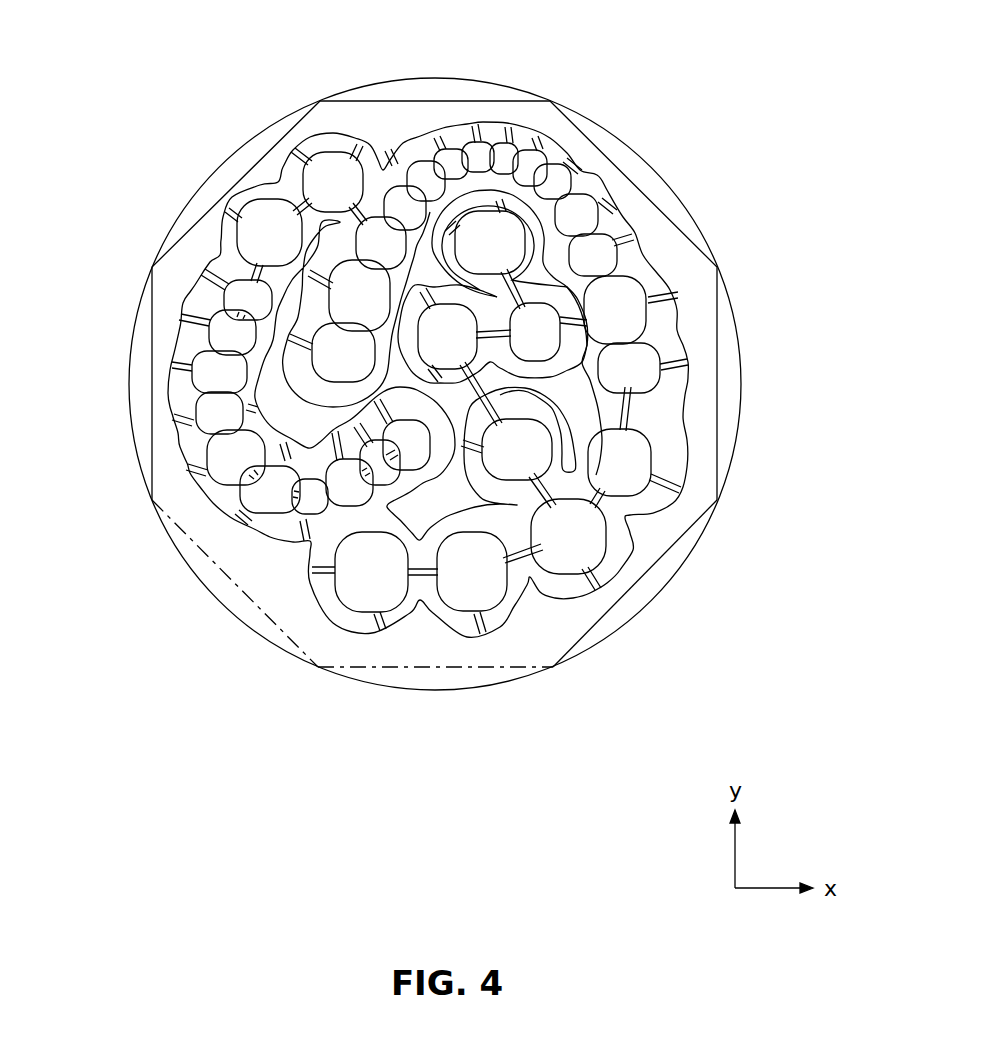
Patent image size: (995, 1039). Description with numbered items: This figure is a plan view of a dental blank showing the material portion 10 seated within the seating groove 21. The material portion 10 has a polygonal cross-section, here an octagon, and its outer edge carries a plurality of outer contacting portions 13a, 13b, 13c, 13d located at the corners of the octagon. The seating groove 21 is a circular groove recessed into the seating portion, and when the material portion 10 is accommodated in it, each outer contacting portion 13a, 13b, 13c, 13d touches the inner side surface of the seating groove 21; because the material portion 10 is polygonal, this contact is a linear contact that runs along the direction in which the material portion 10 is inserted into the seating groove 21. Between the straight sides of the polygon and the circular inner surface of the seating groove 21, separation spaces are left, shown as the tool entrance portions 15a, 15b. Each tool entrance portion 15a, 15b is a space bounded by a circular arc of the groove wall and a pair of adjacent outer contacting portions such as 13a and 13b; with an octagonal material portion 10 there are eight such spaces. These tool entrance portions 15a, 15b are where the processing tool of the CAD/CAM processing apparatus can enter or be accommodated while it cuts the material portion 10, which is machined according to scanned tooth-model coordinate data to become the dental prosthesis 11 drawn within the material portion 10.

The material portion 10 is at (603, 175).
The dental prosthesis 11 is at (590, 545).
The seating groove 21 is at (738, 322).
The outer contacting portion 13a is at (152, 500).
The outer contacting portion 13b is at (318, 667).
The outer contacting portion 13c is at (553, 667).
The outer contacting portion 13d is at (717, 500).
The tool entrance portion 15a is at (227, 592).
The tool entrance portion 15b is at (430, 682).